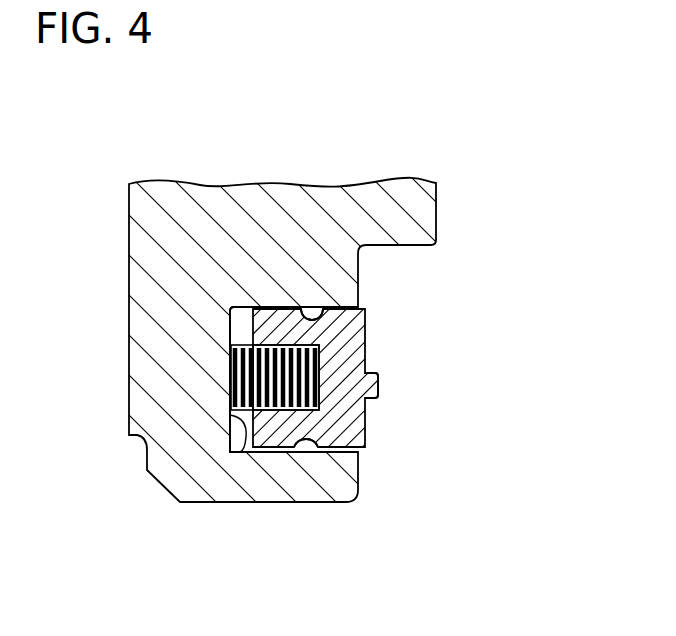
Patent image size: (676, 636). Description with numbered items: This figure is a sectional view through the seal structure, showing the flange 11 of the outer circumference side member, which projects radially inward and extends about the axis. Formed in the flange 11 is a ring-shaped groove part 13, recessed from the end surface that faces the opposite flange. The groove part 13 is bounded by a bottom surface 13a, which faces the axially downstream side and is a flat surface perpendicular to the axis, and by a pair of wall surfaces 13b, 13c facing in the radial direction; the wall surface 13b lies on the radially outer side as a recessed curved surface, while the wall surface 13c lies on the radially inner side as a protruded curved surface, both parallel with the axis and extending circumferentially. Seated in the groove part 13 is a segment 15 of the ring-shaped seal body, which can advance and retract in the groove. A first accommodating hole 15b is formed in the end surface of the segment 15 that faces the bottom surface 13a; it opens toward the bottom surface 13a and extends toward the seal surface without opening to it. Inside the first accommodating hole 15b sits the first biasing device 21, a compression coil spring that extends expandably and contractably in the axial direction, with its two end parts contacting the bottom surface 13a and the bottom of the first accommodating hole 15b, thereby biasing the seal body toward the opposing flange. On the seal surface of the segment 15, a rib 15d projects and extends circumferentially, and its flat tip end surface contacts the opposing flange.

The flange 11 is at (257, 208).
The groove part 13 is at (339, 438).
The bottom surface 13a is at (246, 418).
The wall surface 13b is at (320, 302).
The wall surface 13c is at (296, 447).
The segment 15 is at (367, 326).
The first accommodating hole 15b is at (262, 372).
The rib 15d is at (378, 385).
The first biasing device 21 is at (257, 378).